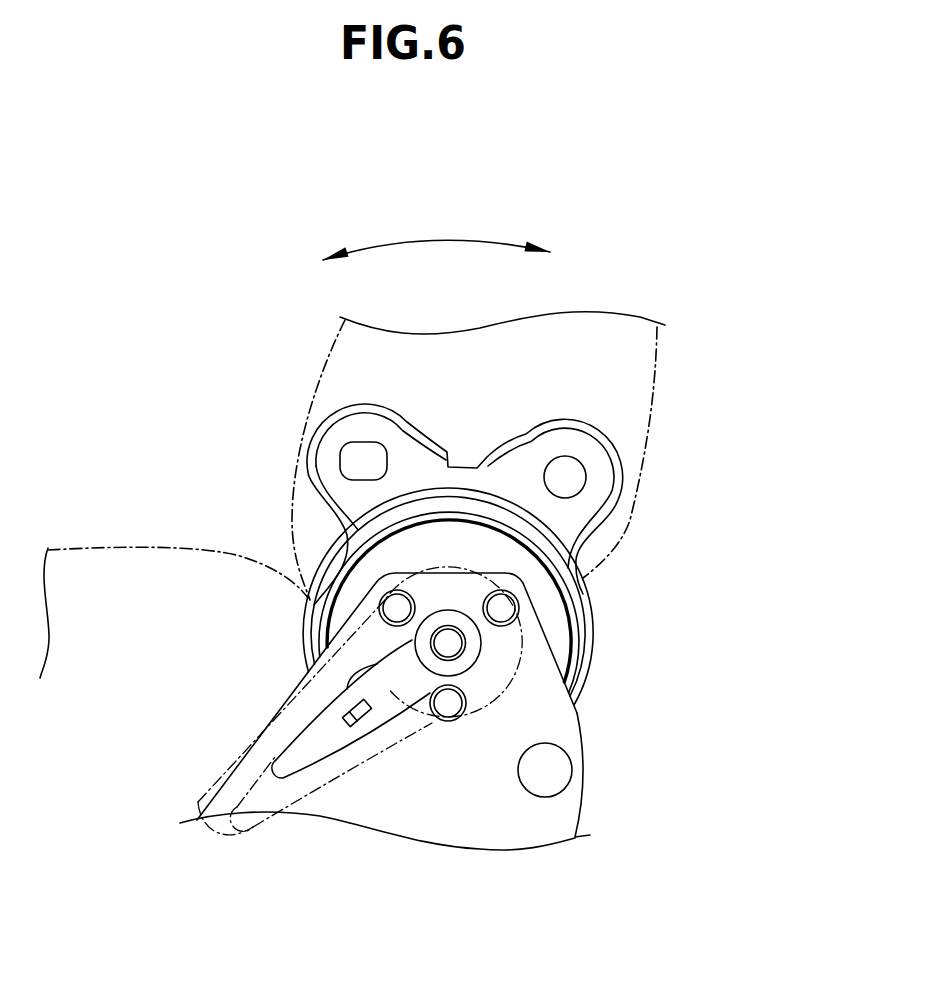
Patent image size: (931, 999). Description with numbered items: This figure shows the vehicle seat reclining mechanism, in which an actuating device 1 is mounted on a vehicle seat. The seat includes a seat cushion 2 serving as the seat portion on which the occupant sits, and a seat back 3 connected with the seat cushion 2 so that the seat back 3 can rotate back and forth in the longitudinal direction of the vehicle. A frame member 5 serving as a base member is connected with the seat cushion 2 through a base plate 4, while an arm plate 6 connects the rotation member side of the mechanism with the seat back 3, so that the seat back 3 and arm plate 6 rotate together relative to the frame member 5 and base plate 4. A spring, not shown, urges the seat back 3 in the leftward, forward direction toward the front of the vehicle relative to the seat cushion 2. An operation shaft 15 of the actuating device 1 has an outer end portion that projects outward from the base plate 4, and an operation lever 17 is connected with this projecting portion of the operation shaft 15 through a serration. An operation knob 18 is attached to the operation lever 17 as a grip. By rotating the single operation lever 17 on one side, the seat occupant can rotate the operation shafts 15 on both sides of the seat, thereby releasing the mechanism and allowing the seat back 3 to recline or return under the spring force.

The actuating device 1 is at (500, 474).
The seat cushion 2 is at (180, 547).
The seat back 3 is at (657, 392).
The base plate 4 is at (605, 740).
The frame member 5 is at (565, 606).
The arm plate 6 is at (644, 458).
The operation shaft 15 is at (450, 643).
The operation lever 17 is at (317, 717).
The operation knob 18 is at (207, 793).